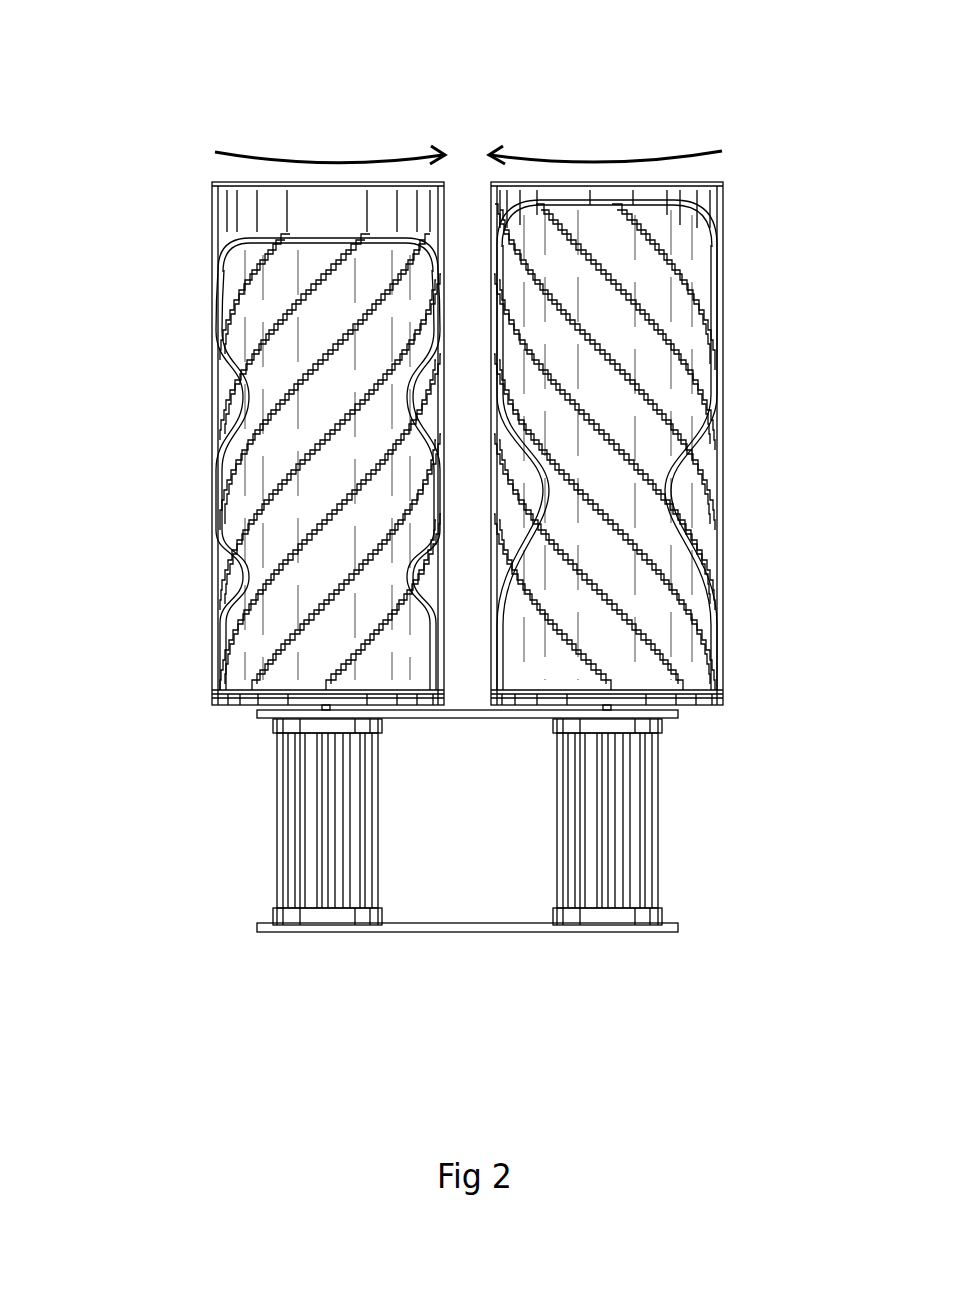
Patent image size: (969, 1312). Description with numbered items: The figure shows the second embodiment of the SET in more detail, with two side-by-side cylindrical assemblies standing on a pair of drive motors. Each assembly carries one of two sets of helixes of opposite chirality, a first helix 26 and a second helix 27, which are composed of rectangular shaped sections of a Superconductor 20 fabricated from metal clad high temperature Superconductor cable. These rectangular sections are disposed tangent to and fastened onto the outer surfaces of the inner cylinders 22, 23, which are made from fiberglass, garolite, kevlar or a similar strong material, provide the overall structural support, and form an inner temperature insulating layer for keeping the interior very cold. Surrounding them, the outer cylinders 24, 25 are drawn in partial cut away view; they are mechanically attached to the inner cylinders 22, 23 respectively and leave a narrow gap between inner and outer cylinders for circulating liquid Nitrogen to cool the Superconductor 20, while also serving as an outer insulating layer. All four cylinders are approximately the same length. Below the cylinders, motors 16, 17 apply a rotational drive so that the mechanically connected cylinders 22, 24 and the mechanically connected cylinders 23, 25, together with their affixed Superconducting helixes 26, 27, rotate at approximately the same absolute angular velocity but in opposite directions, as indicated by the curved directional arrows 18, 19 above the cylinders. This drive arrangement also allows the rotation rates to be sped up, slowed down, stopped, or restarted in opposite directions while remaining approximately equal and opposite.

The motor 16 is at (273, 782).
The motor 17 is at (660, 792).
The directional arrow 18 is at (338, 160).
The directional arrow 19 is at (600, 160).
The Superconductor 20 is at (290, 643).
The inner cylinder 22 is at (290, 370).
The inner cylinder 23 is at (650, 367).
The outer cylinder 24 is at (212, 222).
The outer cylinder 25 is at (723, 202).
The helix 26 is at (345, 427).
The helix 27 is at (627, 443).